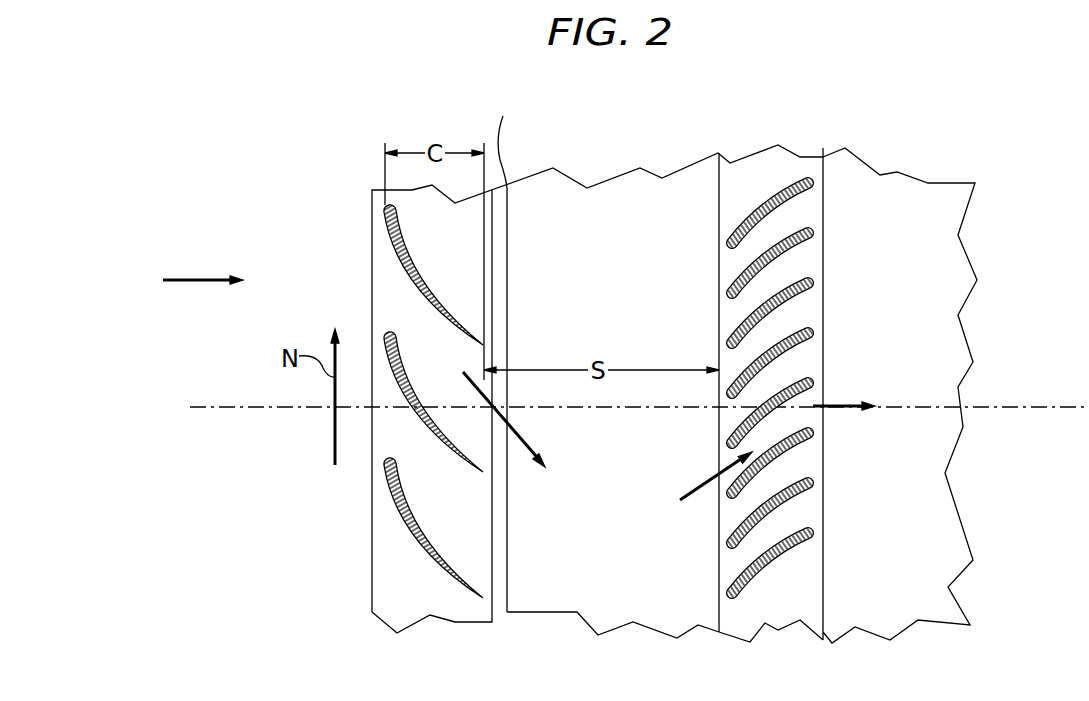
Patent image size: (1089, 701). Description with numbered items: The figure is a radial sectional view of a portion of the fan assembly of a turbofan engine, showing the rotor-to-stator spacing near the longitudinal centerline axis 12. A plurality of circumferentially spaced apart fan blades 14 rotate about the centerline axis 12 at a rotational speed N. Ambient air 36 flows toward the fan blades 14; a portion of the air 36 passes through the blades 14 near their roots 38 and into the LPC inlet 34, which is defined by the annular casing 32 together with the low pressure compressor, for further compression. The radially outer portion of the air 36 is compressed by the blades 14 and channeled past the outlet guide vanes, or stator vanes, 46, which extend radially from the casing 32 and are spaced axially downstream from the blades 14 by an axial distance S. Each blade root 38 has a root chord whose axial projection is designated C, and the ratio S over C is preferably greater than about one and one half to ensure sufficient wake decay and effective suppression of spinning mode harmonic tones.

The longitudinal centerline axis 12 is at (1002, 410).
The fan blades 14 is at (406, 538).
The annular casing 32 is at (618, 203).
The LPC inlet 34 is at (517, 357).
The ambient air 36 is at (190, 280).
The blade roots 38 is at (417, 279).
The outlet guide vanes 46 is at (758, 212).